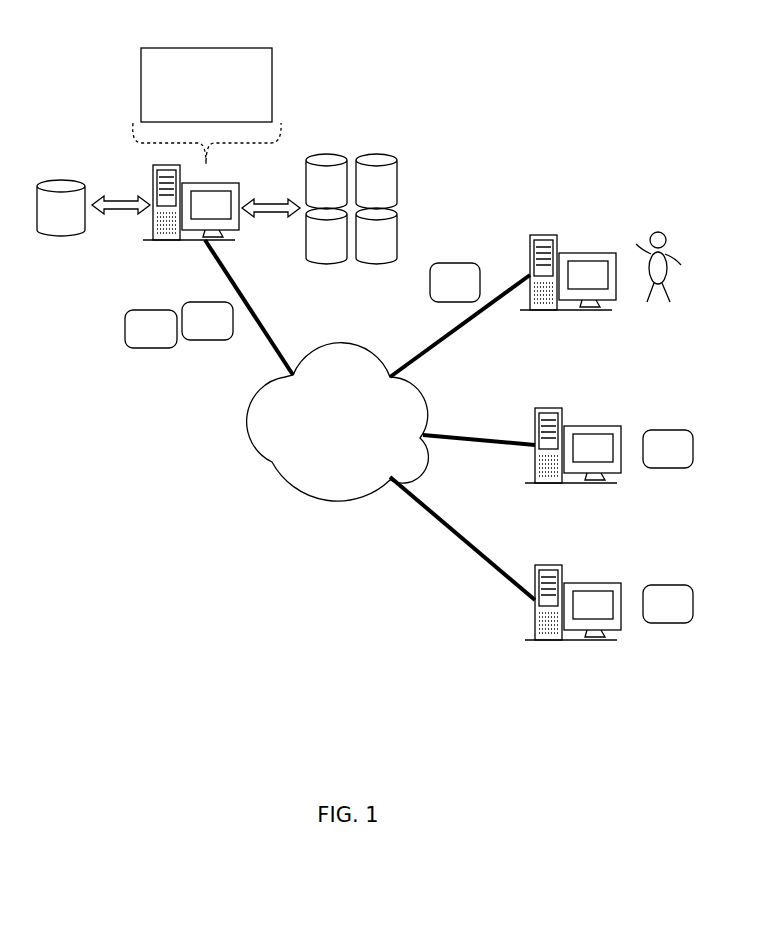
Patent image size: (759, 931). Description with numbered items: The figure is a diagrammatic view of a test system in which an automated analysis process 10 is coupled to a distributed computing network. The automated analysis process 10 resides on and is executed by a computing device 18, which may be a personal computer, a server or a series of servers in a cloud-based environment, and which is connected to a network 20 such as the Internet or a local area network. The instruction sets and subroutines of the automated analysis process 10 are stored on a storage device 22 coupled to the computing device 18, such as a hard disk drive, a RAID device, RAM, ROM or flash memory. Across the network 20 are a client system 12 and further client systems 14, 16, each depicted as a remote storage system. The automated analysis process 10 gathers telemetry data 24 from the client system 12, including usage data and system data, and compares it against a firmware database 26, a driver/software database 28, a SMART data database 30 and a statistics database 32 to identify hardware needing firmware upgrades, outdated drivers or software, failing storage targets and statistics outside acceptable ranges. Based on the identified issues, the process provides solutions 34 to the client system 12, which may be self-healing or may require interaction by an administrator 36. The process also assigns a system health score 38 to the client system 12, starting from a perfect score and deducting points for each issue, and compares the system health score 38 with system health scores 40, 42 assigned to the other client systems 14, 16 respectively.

The automated analysis process 10 is at (140, 83).
The client system 12 is at (530, 252).
The client system 14 is at (535, 425).
The client system 16 is at (535, 583).
The computing device 18 is at (145, 238).
The network 20 is at (338, 422).
The storage device 22 is at (61, 208).
The telemetry data 24 is at (455, 282).
The firmware database 26 is at (326, 181).
The driver/software database 28 is at (376, 181).
The SMART data database 30 is at (326, 236).
The statistics database 32 is at (376, 236).
The solutions 34 is at (207, 321).
The administrator 36 is at (694, 258).
The system health score 38 is at (151, 329).
The system health score 40 is at (668, 449).
The system health score 42 is at (668, 604).